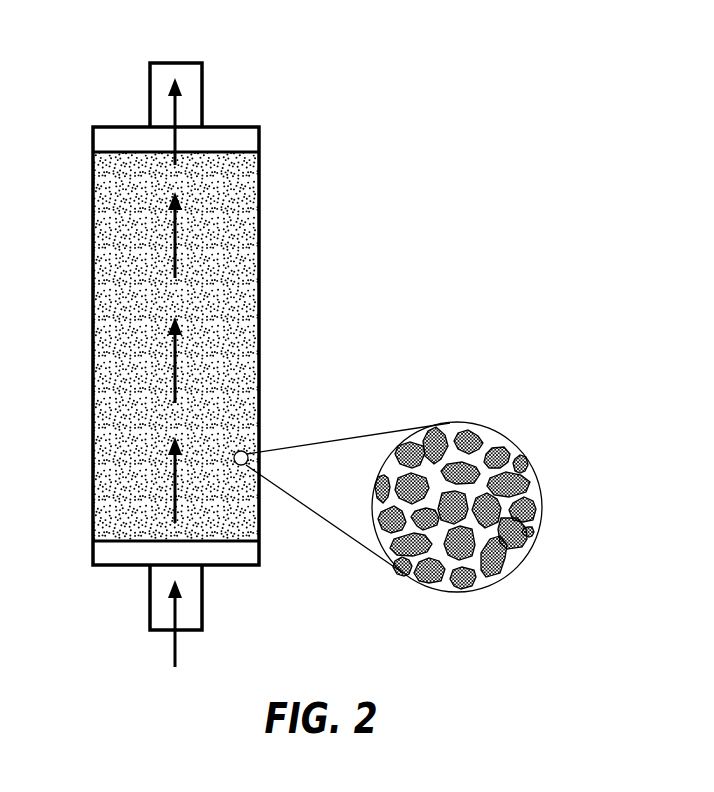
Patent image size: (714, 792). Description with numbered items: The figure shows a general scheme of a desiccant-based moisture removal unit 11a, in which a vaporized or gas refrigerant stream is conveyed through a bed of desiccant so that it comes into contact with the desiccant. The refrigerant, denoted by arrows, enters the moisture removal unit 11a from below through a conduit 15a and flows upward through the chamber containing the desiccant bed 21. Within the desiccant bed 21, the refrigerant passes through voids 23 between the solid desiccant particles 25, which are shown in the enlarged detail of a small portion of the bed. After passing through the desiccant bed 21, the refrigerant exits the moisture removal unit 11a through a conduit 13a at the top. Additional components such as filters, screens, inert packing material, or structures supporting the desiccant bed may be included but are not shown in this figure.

The moisture removal unit 11a is at (93, 327).
The conduit 13a is at (150, 90).
The conduit 15a is at (150, 602).
The desiccant bed 21 is at (240, 243).
The voids 23 is at (460, 445).
The solid desiccant particles 25 is at (503, 456).